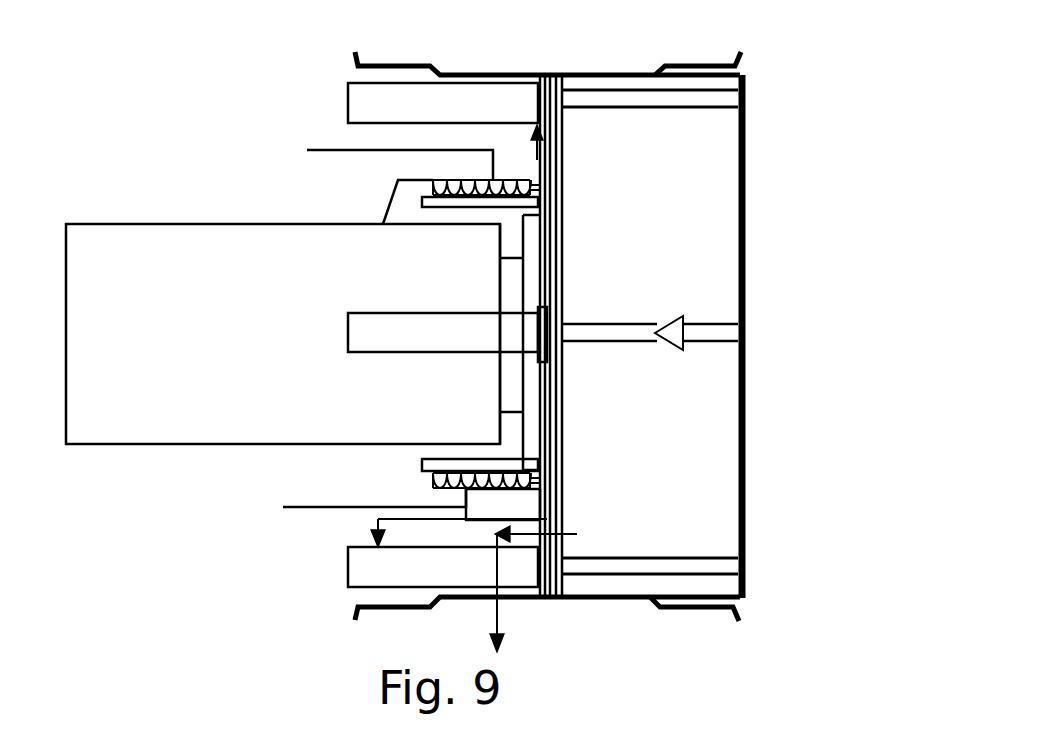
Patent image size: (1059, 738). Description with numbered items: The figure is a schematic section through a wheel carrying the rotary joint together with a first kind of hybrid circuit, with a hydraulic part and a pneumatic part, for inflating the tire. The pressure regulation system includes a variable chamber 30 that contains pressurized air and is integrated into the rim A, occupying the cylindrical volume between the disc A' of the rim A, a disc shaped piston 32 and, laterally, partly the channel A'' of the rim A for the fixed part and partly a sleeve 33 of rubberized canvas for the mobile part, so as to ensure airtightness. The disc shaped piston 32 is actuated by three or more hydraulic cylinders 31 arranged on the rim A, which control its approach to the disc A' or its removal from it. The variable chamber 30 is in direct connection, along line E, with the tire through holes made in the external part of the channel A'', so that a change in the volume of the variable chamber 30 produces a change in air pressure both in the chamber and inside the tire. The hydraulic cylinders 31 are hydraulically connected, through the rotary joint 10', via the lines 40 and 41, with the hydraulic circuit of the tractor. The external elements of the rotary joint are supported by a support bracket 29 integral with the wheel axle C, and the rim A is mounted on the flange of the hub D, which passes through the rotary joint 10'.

The rotary joint 10' is at (450, 324).
The support bracket 29 is at (388, 200).
The variable chamber 30 is at (661, 210).
The hydraulic cylinders 31 is at (385, 336).
The disc shaped piston 32 is at (746, 200).
The sleeve 33 is at (700, 70).
The line 40 is at (337, 148).
The line 41 is at (294, 518).
The rim A is at (547, 322).
The disc of the rim A' is at (471, 322).
The channel of the rim A'' is at (578, 332).
The wheel axle C is at (82, 336).
The hub D is at (545, 381).
The line E is at (563, 537).